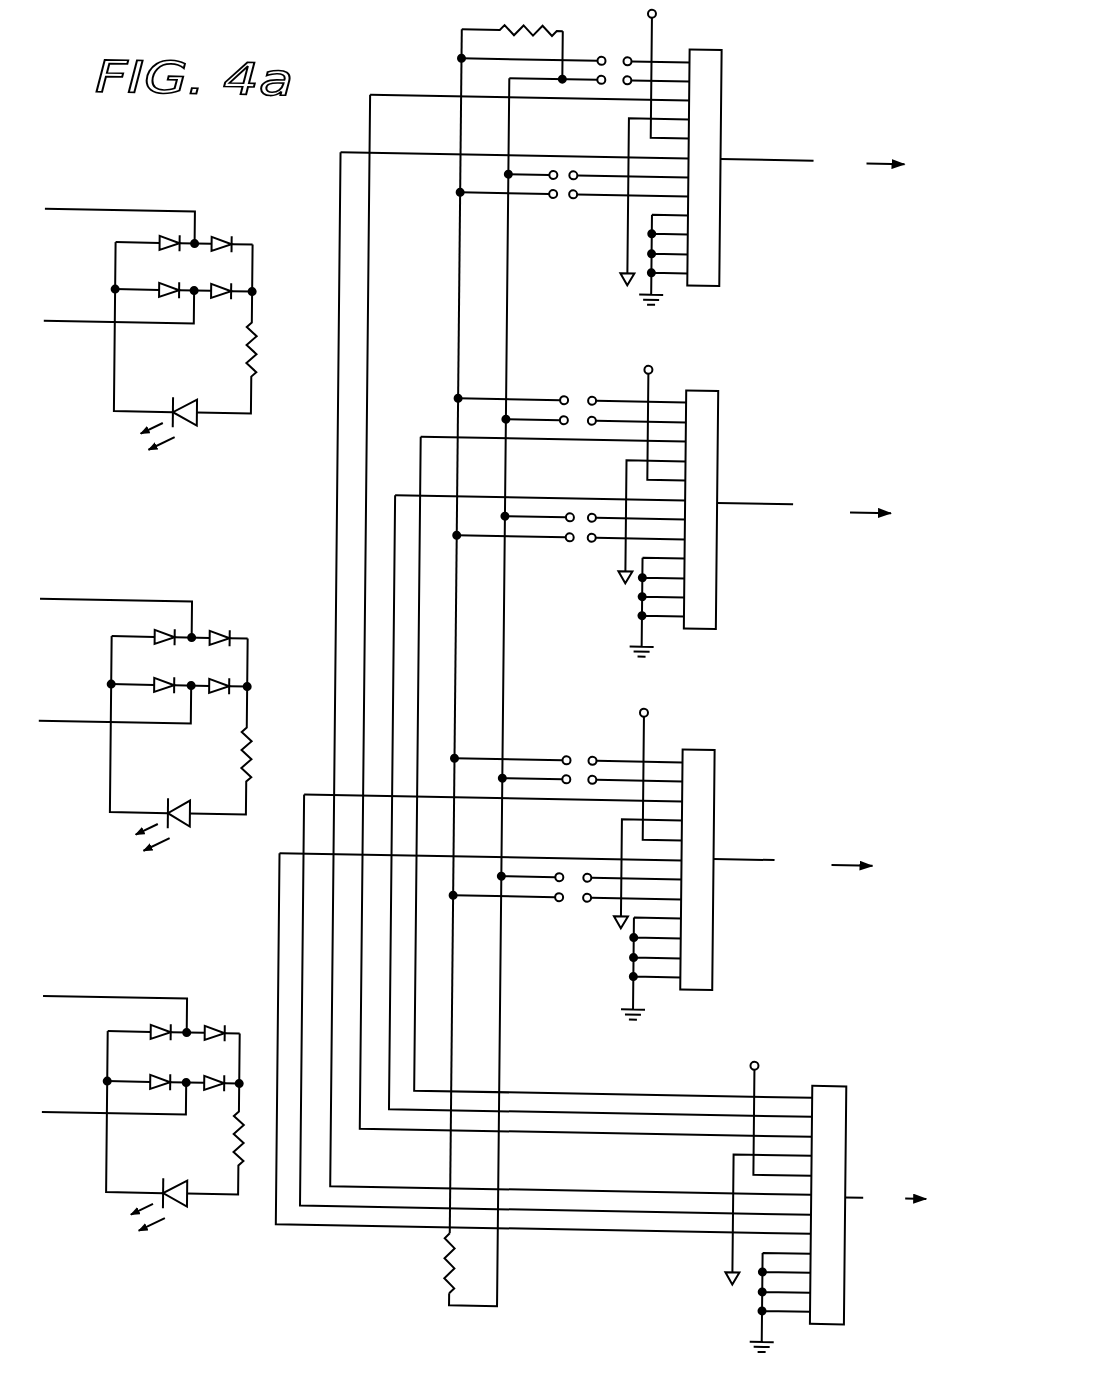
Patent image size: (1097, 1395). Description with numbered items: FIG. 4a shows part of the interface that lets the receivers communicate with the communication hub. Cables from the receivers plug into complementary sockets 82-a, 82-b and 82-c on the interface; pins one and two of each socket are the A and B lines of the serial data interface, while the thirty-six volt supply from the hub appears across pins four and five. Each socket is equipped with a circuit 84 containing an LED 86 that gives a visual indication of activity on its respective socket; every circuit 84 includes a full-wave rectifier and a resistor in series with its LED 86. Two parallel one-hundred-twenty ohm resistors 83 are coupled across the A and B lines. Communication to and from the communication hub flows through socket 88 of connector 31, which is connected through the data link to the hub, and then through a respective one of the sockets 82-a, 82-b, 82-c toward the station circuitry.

The socket 82-a is at (775, 112).
The socket 82-b is at (802, 424).
The socket 82-c is at (777, 770).
The 120Ω resistor 83 is at (556, 19).
The circuit 84 is at (262, 211).
The LED 86 is at (203, 414).
The socket 88 is at (839, 1045).
The connector 31 is at (412, 1248).